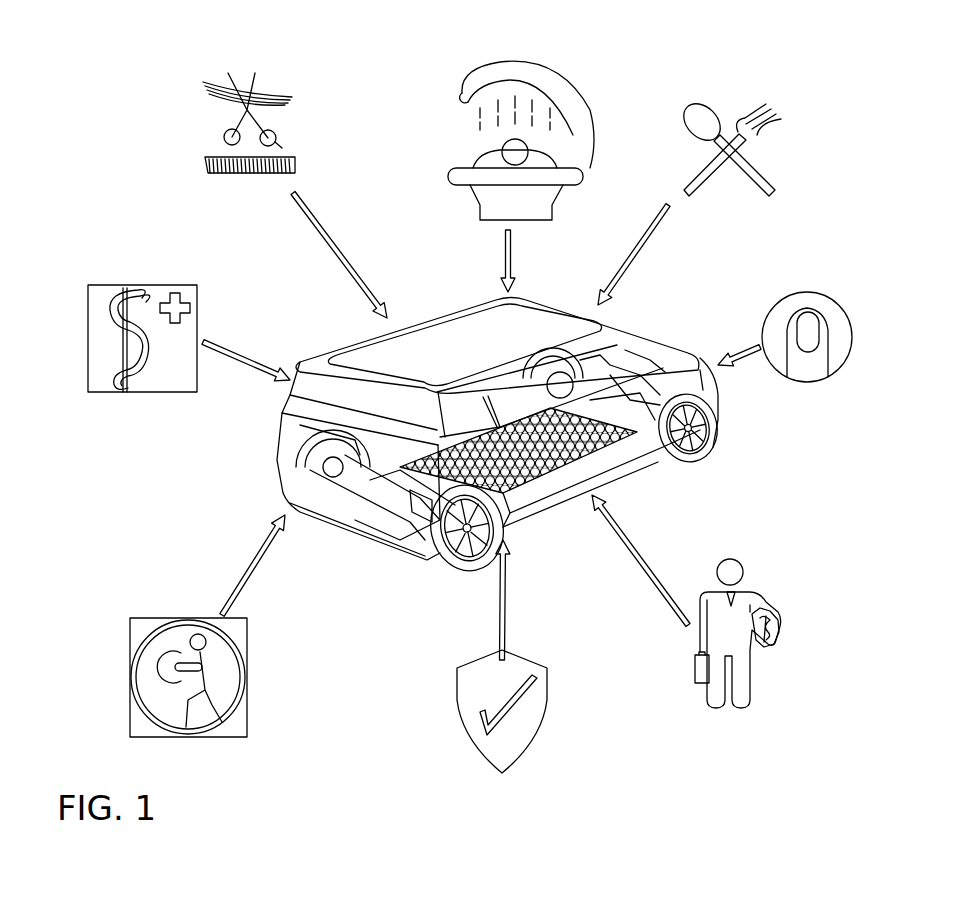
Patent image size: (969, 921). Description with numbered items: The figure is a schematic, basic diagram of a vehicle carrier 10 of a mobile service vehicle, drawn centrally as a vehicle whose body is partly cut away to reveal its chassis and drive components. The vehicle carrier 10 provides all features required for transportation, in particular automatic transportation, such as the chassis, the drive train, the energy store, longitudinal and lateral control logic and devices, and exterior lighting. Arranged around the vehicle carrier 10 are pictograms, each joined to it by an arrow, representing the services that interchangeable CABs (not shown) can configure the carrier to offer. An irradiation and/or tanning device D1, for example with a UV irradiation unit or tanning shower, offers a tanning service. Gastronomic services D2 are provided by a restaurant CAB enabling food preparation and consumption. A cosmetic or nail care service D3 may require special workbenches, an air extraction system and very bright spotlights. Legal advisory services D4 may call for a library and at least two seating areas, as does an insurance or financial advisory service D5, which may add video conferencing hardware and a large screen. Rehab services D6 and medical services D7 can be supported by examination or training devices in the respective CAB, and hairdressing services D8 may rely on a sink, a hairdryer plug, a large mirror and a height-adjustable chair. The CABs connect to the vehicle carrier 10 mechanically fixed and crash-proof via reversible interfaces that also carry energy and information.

The vehicle carrier 10 is at (500, 468).
The irradiation and/or tanning device D1 is at (562, 83).
The gastronomic services D2 is at (757, 110).
The cosmetic or nail care service D3 is at (820, 293).
The legal advisory services D4 is at (752, 592).
The insurance advisory service or financial advisory service D5 is at (547, 682).
The rehab services D6 is at (153, 620).
The medical services D7 is at (117, 288).
The hairdressing services D8 is at (268, 85).